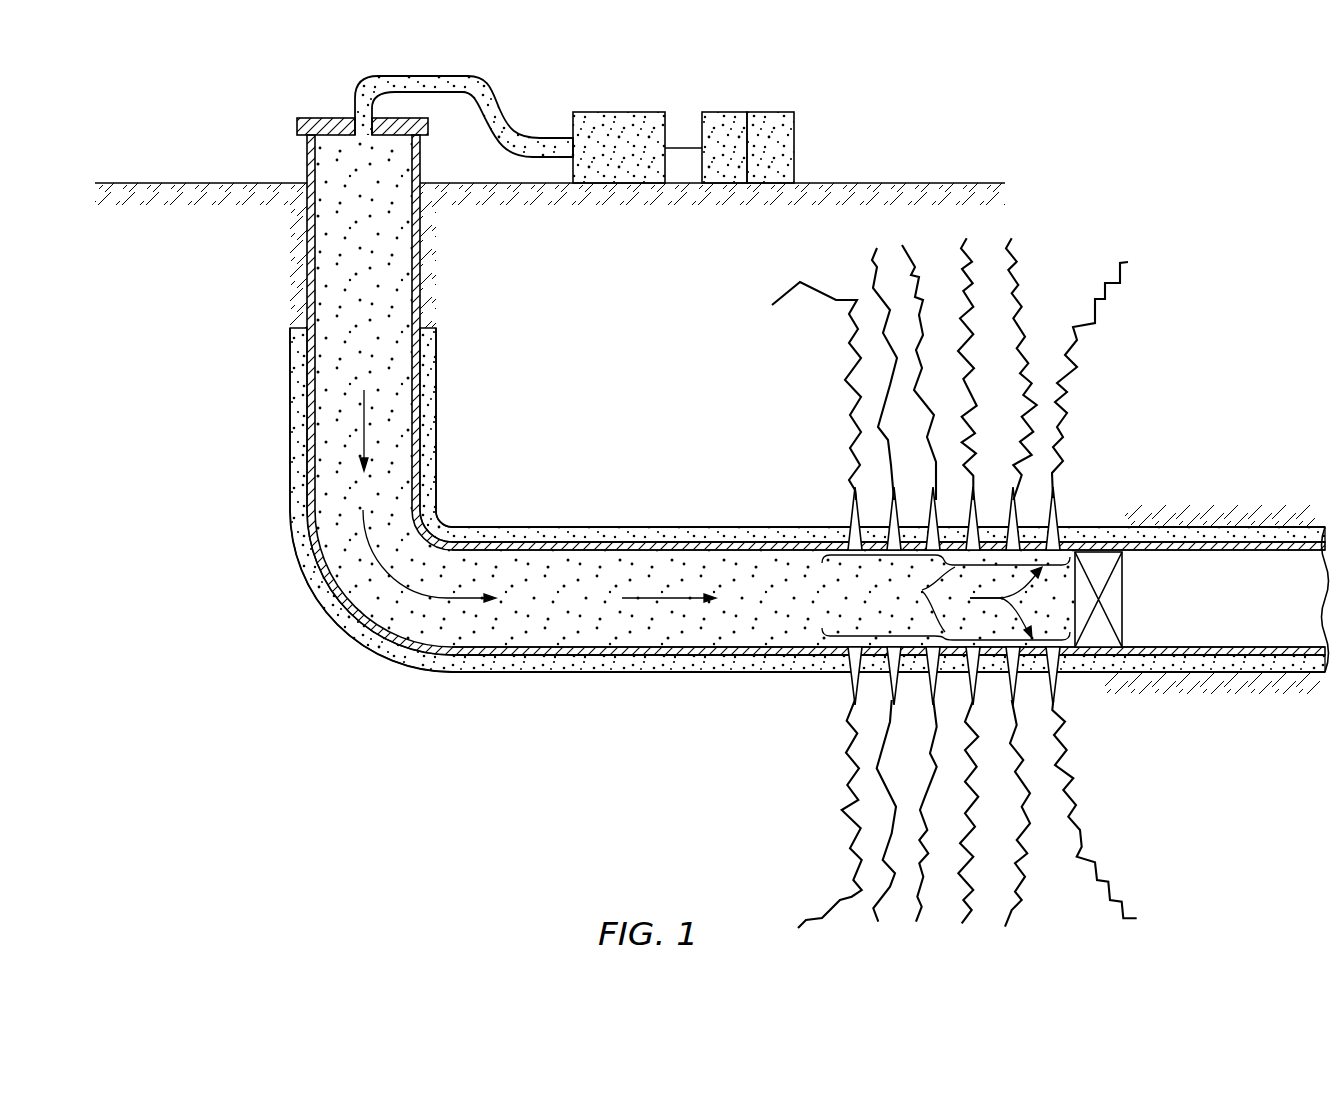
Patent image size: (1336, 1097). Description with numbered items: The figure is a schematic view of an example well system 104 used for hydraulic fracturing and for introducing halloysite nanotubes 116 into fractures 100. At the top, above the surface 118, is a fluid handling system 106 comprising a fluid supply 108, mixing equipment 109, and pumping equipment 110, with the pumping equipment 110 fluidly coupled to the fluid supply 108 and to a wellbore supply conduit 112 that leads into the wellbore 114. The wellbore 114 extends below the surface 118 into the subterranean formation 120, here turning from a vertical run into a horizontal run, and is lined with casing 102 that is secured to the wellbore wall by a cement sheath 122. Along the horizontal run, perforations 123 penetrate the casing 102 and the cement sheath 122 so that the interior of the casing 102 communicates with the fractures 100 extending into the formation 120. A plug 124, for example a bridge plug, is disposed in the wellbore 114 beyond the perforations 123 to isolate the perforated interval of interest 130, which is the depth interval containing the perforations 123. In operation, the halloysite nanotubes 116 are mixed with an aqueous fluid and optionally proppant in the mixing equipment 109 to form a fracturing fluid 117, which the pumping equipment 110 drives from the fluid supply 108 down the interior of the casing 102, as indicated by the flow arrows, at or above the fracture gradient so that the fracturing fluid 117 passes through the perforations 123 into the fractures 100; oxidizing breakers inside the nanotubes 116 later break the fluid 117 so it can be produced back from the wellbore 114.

The fractures 100 is at (1140, 857).
The casing 102 is at (736, 547).
The well system 104 is at (155, 93).
The fluid handling system 106 is at (766, 80).
The fluid supply 108 is at (776, 112).
The mixing equipment 109 is at (713, 112).
The pumping equipment 110 is at (637, 112).
The wellbore supply conduit 112 is at (468, 76).
The wellbore 114 is at (437, 471).
The halloysite nanotubes 116 is at (666, 565).
The fracturing fluid 117 is at (378, 410).
The surface 118 is at (905, 182).
The subterranean formation 120 is at (541, 259).
The cement sheath 122 is at (784, 531).
The perforations 123 is at (903, 486).
The plug 124 is at (1124, 567).
The perforated interval of interest 130 is at (922, 590).